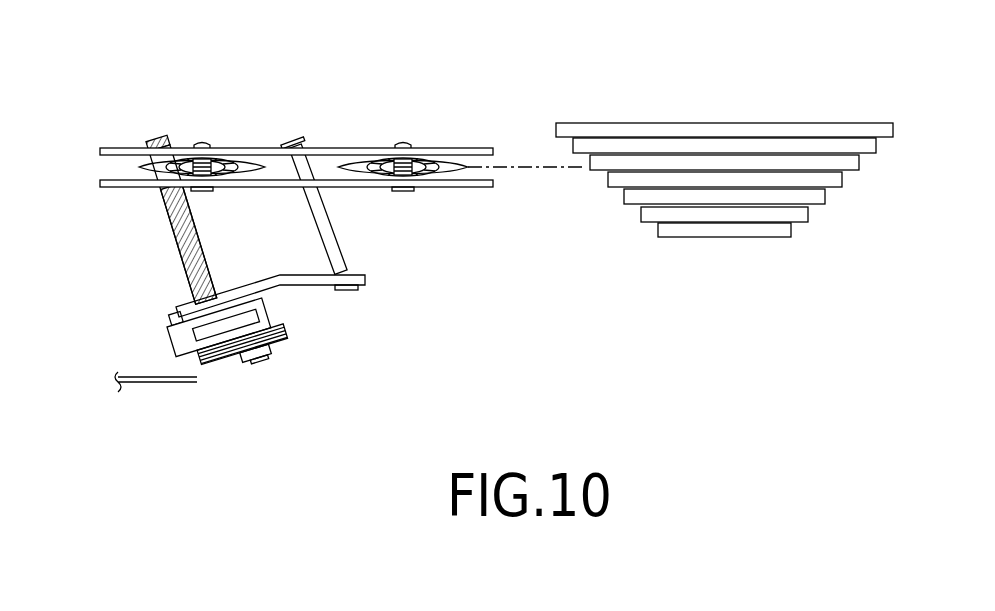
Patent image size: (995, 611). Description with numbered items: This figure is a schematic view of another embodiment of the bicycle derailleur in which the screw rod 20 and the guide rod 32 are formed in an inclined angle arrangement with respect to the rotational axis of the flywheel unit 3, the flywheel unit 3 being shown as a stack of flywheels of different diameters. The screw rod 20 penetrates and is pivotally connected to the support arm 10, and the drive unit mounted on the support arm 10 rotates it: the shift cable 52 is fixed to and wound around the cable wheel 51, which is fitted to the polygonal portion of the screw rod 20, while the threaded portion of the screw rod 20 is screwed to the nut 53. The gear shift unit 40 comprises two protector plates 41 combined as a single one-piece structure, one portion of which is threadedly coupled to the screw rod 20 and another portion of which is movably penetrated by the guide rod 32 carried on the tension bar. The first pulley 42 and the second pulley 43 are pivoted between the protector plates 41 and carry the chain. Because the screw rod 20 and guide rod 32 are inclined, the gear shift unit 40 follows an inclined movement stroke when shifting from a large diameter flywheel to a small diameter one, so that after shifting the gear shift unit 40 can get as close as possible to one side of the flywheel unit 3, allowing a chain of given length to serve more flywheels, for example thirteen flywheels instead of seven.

The flywheel unit 3 is at (729, 103).
The support arm 10 is at (263, 317).
The screw rod 20 is at (172, 223).
The guide rod 32 is at (328, 228).
The gear shift unit 40 is at (151, 88).
The protector plates 41 is at (100, 183).
The first pulley 42 is at (226, 158).
The second pulley 43 is at (420, 165).
The cable wheel 51 is at (275, 357).
The shift cable 52 is at (148, 382).
The nut 53 is at (220, 387).